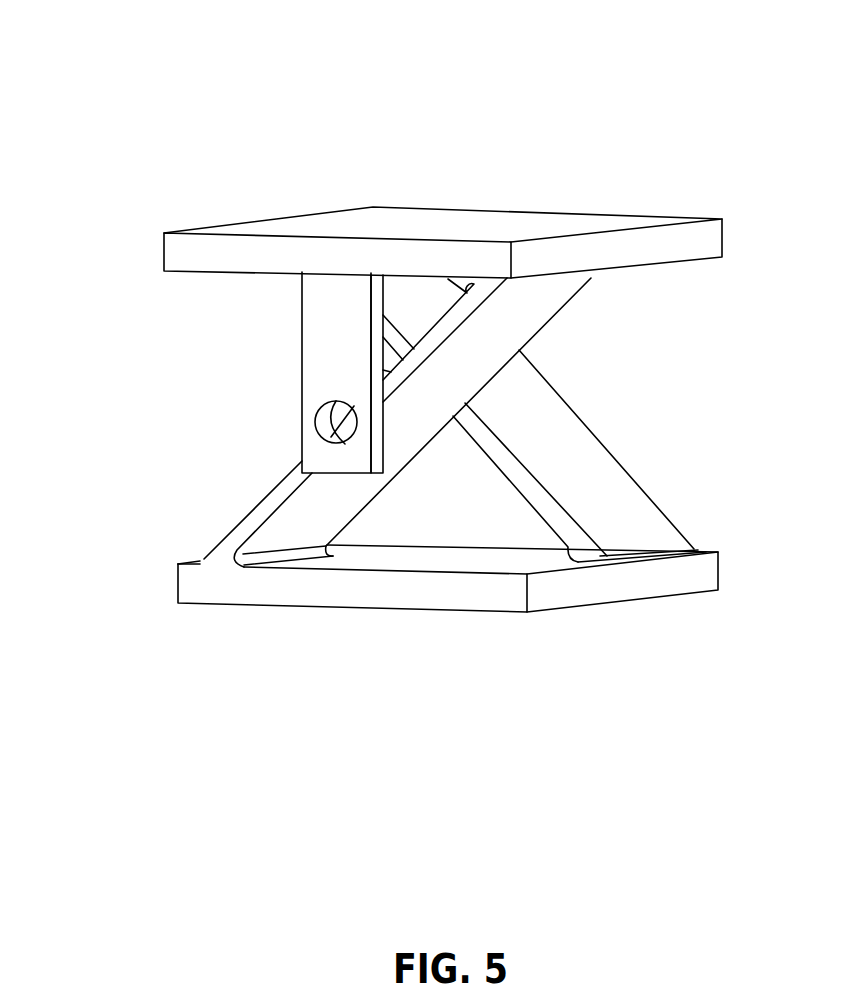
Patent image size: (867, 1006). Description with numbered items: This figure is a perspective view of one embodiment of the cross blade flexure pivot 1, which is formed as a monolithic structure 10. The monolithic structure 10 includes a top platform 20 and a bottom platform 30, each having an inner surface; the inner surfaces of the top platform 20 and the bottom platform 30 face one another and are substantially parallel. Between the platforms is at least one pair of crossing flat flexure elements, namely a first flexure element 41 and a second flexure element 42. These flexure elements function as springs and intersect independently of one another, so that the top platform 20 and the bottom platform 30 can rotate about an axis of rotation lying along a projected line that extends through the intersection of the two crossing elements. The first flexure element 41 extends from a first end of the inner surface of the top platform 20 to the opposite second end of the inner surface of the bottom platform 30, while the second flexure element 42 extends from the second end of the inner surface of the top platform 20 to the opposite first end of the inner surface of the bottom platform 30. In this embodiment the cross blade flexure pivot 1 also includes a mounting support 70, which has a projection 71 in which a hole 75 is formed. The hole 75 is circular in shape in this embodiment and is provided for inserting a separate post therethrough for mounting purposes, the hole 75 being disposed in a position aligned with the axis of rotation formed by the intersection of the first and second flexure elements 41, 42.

The cross blade flexure pivot 1 is at (300, 48).
The monolithic structure 10 is at (138, 408).
The top platform 20 is at (425, 222).
The bottom platform 30 is at (435, 590).
The first flexure element 41 is at (517, 313).
The second flexure element 42 is at (598, 475).
The mounting support 70 is at (277, 333).
The projection 71 is at (317, 365).
The hole 75 is at (330, 417).